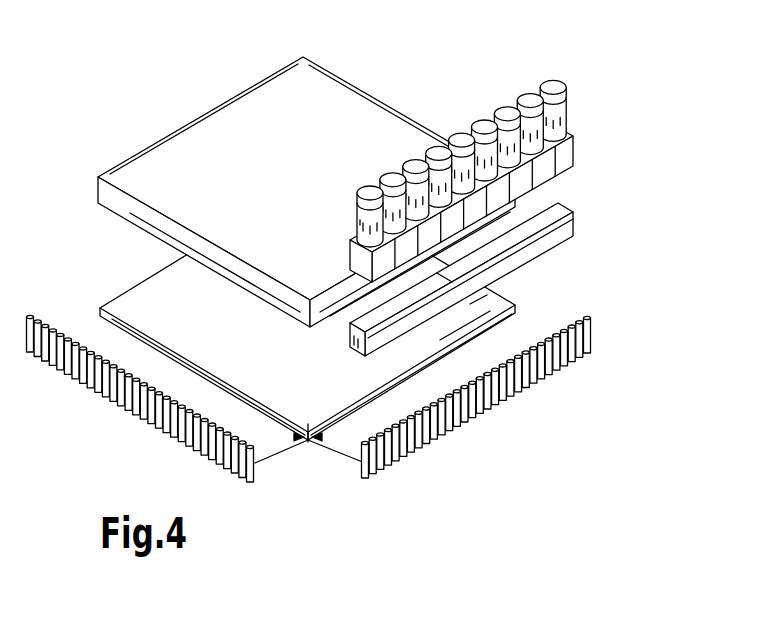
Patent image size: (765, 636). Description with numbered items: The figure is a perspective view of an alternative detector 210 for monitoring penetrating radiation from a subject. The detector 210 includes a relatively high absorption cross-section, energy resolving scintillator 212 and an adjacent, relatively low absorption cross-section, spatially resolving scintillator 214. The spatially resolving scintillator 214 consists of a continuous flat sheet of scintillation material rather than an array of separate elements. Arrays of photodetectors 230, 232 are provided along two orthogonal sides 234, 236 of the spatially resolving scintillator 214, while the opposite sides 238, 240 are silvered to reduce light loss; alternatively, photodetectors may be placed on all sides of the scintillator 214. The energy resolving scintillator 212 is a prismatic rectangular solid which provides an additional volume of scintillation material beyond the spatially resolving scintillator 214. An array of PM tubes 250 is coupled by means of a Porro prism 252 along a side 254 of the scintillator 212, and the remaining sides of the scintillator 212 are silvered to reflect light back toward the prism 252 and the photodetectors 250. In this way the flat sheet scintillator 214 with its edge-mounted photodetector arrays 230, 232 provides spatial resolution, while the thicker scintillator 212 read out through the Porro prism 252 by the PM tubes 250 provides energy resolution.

The alternative detector 210 is at (394, 68).
The energy resolving scintillator 212 is at (299, 192).
The spatially resolving scintillator 214 is at (225, 316).
The array of photodetectors 230 is at (255, 478).
The array of photodetectors 232 is at (590, 337).
The side of scintillator 234 is at (200, 370).
The side of scintillator 236 is at (365, 395).
The silvered side 238 is at (493, 287).
The silvered side 240 is at (273, 322).
The array of PM tubes 250 is at (572, 110).
The Porro prism 252 is at (557, 207).
The side of scintillator 254 is at (335, 300).